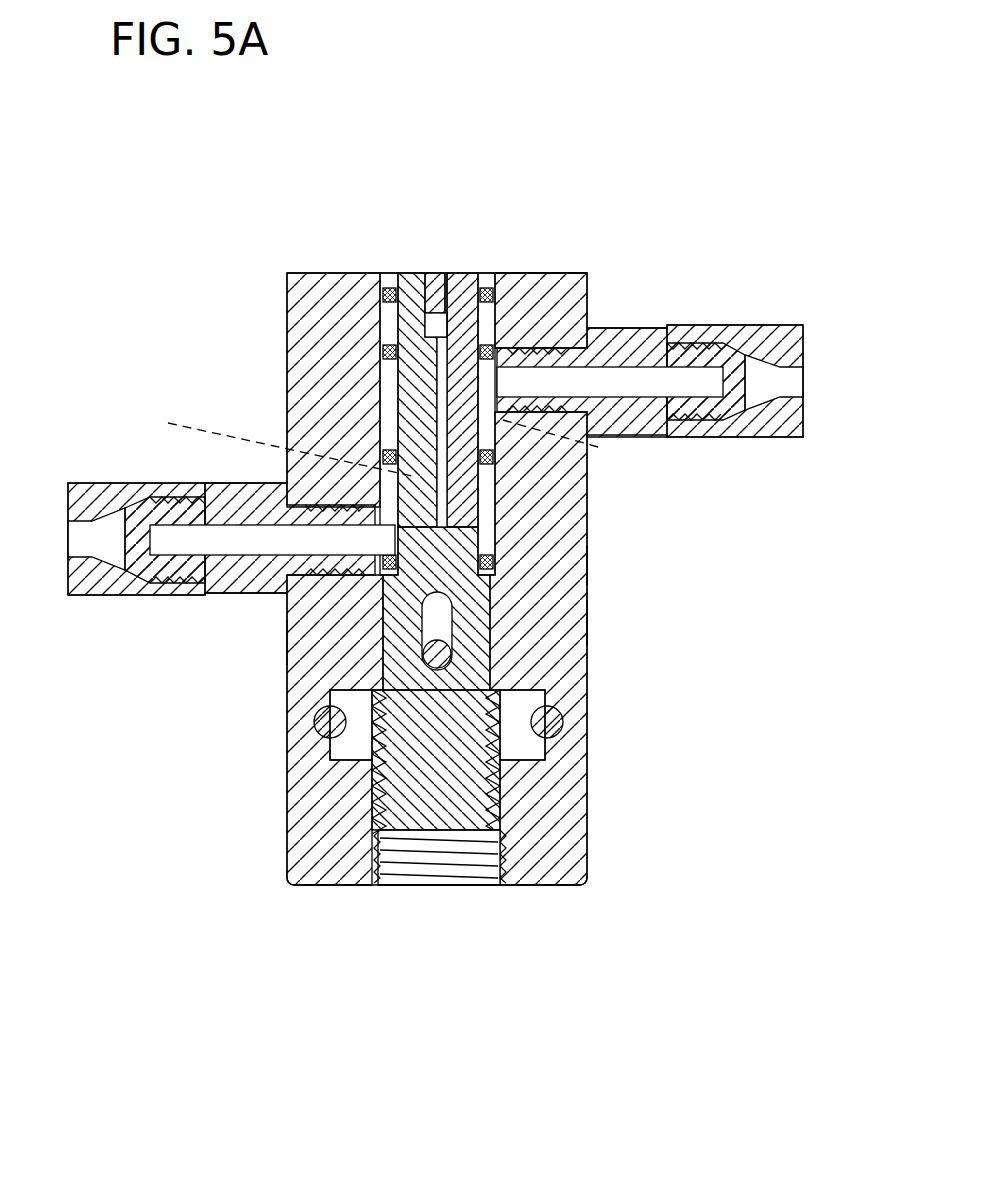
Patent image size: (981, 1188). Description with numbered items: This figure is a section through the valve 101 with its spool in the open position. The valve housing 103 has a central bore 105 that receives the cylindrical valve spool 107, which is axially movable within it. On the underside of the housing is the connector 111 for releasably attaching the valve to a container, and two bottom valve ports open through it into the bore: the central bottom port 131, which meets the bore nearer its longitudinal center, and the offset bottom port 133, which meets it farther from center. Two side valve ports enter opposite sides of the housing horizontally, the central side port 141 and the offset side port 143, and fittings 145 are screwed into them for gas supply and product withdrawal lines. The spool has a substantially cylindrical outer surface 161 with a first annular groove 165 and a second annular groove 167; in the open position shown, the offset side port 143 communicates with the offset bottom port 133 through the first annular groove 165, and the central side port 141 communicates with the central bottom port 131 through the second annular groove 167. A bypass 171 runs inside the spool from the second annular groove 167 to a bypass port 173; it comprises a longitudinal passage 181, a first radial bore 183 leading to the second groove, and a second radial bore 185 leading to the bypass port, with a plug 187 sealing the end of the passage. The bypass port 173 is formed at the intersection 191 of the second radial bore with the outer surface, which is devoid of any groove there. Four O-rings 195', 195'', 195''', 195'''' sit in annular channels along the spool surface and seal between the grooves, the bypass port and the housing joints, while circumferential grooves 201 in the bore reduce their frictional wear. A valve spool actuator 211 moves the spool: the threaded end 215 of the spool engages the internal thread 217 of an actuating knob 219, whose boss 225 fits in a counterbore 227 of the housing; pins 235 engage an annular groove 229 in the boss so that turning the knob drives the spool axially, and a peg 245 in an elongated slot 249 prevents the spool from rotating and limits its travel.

The valve 101 is at (620, 150).
The valve housing 103 is at (600, 685).
The central bore 105 is at (590, 622).
The valve spool 107 is at (500, 885).
The connector 111 is at (625, 463).
The central bottom port 131 is at (267, 439).
The offset bottom port 133 is at (590, 472).
The central side port 141 is at (236, 538).
The offset side port 143 is at (565, 337).
The fittings 145 is at (82, 490).
The outer cylindrical surface 161 is at (370, 665).
The first annular groove 165 is at (432, 380).
The second annular groove 167 is at (588, 565).
The bypass 171 is at (415, 350).
The bypass port 173 is at (490, 335).
The longitudinal passage 181 is at (422, 420).
The first radial bore 183 is at (385, 500).
The second radial bore 185 is at (512, 333).
The plug 187 is at (434, 297).
The intersection 191 is at (492, 315).
The first O-ring 195' is at (305, 597).
The second O-ring 195'' is at (303, 432).
The third O-ring 195''' is at (289, 299).
The fourth O-ring 195'''' is at (335, 247).
The circumferential grooves 201 is at (395, 360).
The valve spool actuator 211 is at (280, 925).
The end of valve spool 215 is at (425, 832).
The internal thread 217 is at (495, 780).
The actuating knob 219 is at (295, 857).
The boss 225 is at (525, 748).
The counterbore 227 is at (552, 722).
The annular groove 229 is at (330, 712).
The pins 235 is at (295, 770).
The peg 245 is at (447, 655).
The elongated slot 249 is at (330, 640).